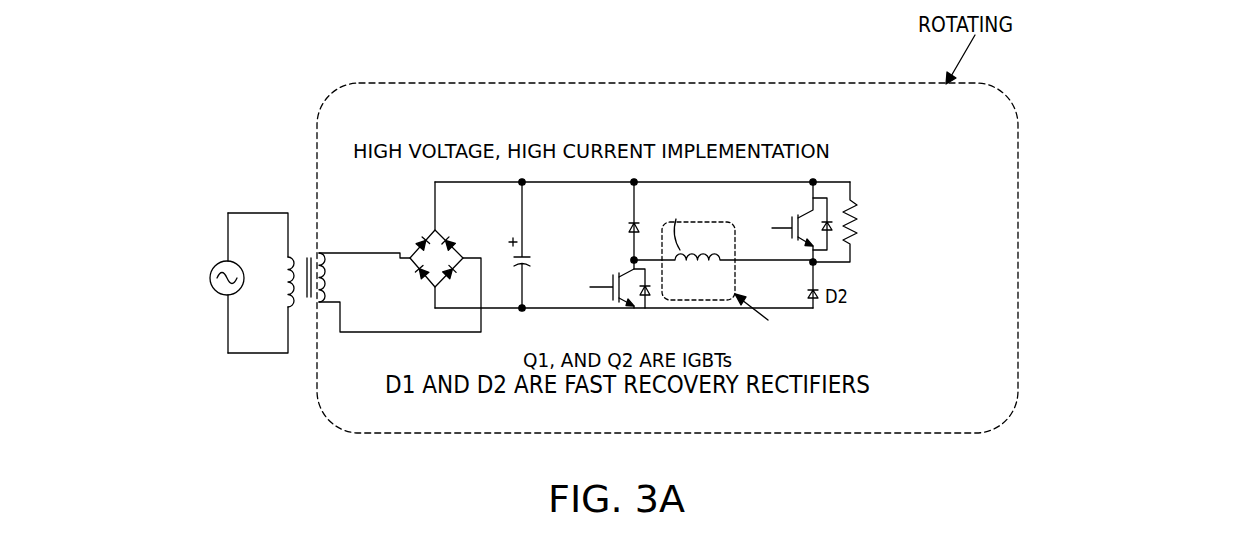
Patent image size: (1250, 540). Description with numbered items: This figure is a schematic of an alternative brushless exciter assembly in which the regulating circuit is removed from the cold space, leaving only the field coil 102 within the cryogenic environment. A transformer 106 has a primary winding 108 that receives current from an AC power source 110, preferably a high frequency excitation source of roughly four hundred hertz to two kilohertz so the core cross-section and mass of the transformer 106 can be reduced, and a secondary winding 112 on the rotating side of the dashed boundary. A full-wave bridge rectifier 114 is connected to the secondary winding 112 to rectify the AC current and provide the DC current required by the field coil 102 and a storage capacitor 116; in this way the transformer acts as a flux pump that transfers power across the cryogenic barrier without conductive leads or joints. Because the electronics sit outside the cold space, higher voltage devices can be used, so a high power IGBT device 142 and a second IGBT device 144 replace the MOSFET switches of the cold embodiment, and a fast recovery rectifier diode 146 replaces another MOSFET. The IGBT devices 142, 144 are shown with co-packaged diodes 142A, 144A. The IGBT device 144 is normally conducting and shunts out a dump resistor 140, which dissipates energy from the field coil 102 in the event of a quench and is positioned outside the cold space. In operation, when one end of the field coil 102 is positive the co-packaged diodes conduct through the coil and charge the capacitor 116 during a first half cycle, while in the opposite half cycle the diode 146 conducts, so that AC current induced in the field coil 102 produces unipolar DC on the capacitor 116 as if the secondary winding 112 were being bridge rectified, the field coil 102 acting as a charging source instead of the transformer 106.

The field coil 102 is at (713, 263).
The transformer 106 is at (328, 237).
The primary winding 108 is at (287, 285).
The AC power source 110 is at (227, 261).
The secondary winding 112 is at (328, 287).
The full-wave bridge rectifier 114 is at (451, 238).
The storage capacitor 116 is at (527, 252).
The dump resistor 140 is at (853, 209).
The IGBT device 142 is at (612, 283).
The diode 142A is at (641, 291).
The IGBT device 144 is at (788, 223).
The diode 144A is at (830, 248).
The fast recovery rectifier diode 146 is at (637, 216).